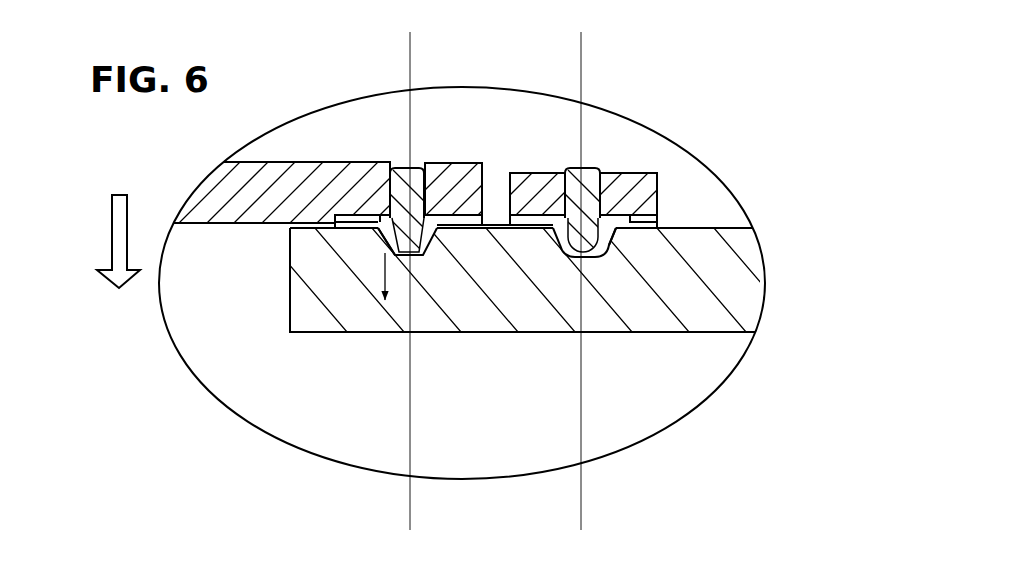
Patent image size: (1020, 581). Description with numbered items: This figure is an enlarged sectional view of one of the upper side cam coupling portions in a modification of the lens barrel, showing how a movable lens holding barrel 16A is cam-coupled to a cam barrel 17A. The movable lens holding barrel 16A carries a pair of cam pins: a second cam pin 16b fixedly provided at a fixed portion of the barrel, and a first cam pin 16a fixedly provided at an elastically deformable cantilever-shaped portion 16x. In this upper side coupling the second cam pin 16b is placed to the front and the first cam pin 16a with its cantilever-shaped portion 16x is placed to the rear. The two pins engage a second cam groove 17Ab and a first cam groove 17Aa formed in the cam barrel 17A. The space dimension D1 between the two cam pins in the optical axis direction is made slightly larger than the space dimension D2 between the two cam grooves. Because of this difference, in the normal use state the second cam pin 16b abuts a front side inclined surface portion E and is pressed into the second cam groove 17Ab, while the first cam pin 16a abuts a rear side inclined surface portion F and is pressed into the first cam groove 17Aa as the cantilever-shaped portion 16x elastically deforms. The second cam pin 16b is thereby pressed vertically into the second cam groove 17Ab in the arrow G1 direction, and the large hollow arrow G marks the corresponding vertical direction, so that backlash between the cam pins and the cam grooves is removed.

The movable lens holding barrel 16A is at (293, 185).
The second cam pin 16b is at (397, 196).
The first cam pin 16a is at (585, 217).
The cantilever-shaped portion 16x is at (640, 195).
The cam barrel 17A is at (713, 315).
The second cam groove 17Ab is at (435, 252).
The first cam groove 17Aa is at (555, 250).
The arrow G1 direction G1 is at (385, 253).
The gravity direction G is at (112, 228).
The front side inclined surface portion E is at (380, 244).
The rear side inclined surface portion F is at (605, 247).
The space dimension D1 is at (581, 47).
The space dimension D2 is at (581, 525).